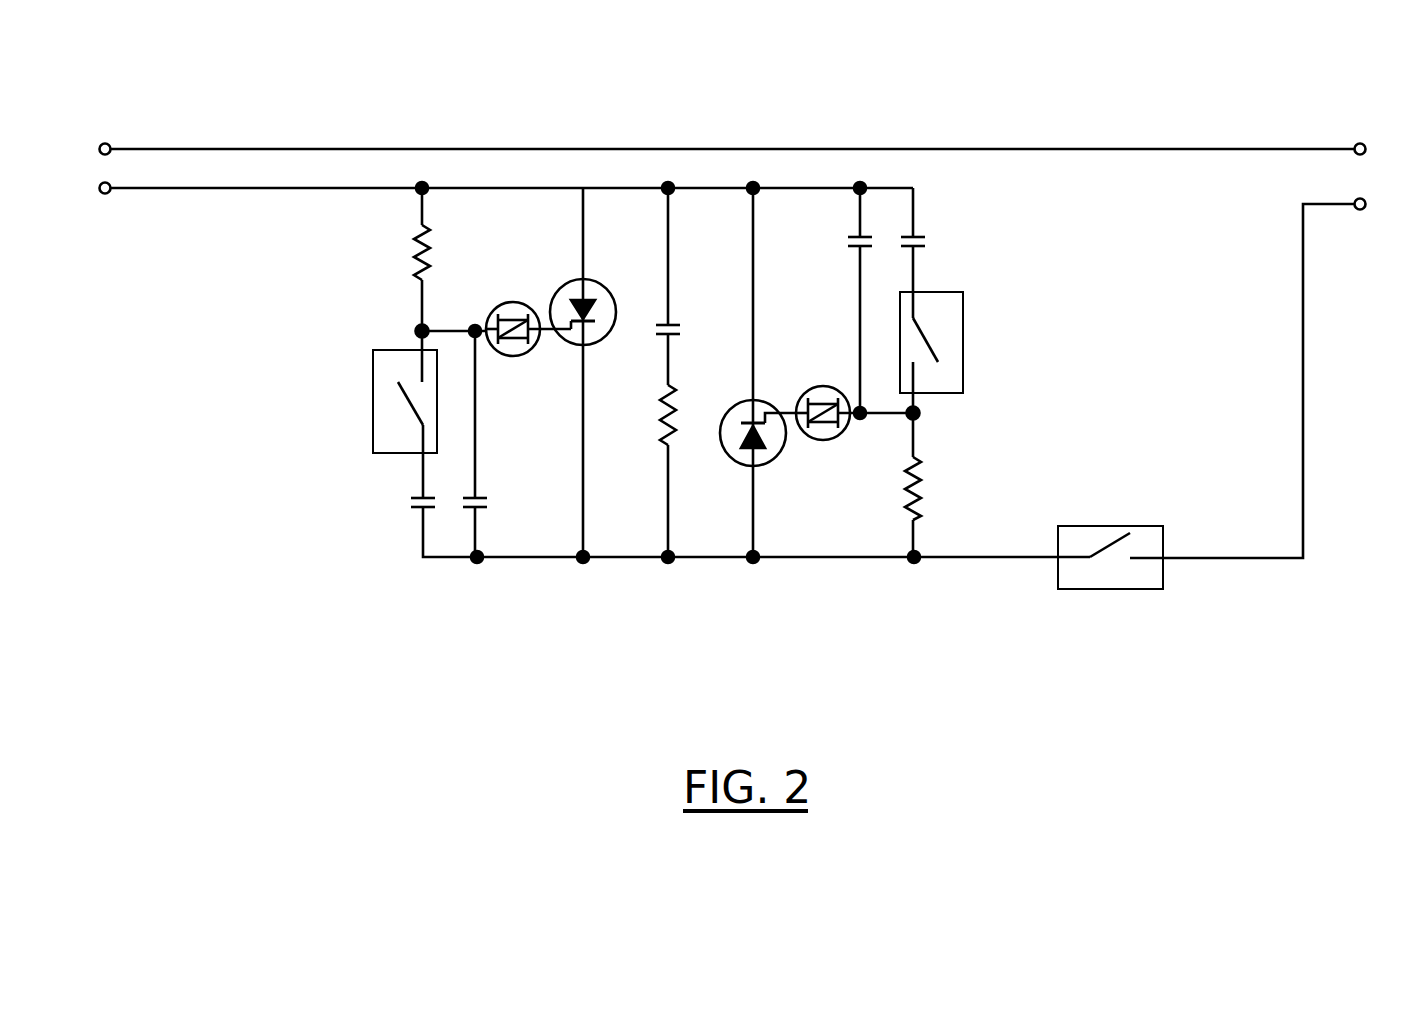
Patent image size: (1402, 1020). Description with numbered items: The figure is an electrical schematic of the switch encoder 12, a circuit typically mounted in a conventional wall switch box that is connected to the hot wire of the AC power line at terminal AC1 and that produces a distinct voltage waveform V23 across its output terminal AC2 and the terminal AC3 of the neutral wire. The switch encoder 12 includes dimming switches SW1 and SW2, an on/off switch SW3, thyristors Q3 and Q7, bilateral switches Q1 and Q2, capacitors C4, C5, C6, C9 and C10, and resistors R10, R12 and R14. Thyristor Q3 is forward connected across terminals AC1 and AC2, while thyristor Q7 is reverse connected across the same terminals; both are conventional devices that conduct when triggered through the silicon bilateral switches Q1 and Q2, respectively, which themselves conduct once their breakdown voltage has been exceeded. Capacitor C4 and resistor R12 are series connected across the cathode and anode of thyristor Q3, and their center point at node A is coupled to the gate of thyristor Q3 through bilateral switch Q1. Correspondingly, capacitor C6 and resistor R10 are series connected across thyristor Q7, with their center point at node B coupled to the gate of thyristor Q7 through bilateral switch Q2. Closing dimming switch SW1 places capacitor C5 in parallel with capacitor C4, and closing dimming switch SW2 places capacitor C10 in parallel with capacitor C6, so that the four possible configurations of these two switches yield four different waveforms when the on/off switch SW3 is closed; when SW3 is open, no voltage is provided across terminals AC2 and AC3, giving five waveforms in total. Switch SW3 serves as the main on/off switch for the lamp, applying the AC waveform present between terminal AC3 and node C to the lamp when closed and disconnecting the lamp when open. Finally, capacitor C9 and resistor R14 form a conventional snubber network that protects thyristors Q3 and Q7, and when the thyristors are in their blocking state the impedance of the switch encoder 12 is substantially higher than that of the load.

The switch encoder 12 is at (343, 650).
The terminal AC1 is at (501, 209).
The output terminal AC2 is at (1281, 379).
The terminal AC3 is at (744, 125).
The voltage waveform V23 is at (1269, 195).
The resistor R12 is at (398, 259).
The resistor R14 is at (649, 470).
The resistor R10 is at (940, 485).
The capacitor C4 is at (497, 444).
The capacitor C5 is at (403, 499).
The capacitor C6 is at (842, 300).
The capacitor C9 is at (689, 286).
The capacitor C10 is at (941, 240).
The bilateral switch Q1 is at (528, 309).
The bilateral switch Q2 is at (854, 390).
The thyristor Q3 is at (591, 372).
The thyristor Q7 is at (764, 372).
The dimming switch SW1 is at (371, 413).
The dimming switch SW2 is at (968, 352).
The on/off switch SW3 is at (1110, 579).
The node A is at (438, 330).
The node B is at (928, 413).
The node C is at (918, 580).